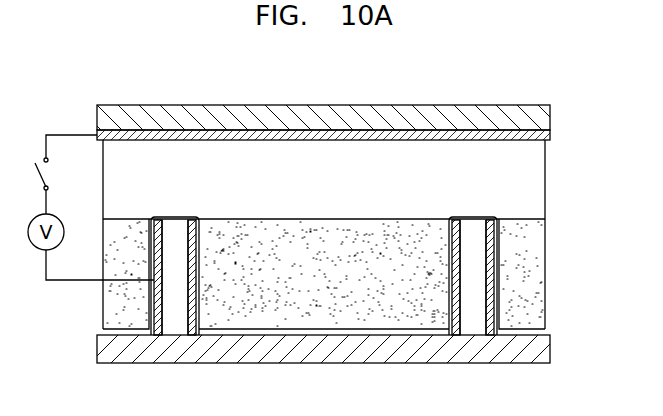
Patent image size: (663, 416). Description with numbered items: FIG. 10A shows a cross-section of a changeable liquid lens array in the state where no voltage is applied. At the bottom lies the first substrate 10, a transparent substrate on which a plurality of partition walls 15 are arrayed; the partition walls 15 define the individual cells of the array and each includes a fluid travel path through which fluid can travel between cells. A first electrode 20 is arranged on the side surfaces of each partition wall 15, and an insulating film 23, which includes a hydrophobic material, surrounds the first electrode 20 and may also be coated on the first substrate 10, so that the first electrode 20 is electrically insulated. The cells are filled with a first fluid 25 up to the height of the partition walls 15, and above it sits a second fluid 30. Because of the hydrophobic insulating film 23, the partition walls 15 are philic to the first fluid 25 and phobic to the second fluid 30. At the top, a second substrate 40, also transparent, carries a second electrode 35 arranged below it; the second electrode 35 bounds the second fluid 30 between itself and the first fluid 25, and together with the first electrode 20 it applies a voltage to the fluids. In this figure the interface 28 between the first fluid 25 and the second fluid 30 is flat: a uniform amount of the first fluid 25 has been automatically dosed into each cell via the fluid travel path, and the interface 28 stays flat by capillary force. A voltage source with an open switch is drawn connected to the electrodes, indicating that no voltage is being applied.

The first substrate 10 is at (550, 352).
The partition wall 15 is at (470, 330).
The first electrode 20 is at (490, 302).
The insulating film 23 is at (497, 270).
The first fluid 25 is at (322, 300).
The interface 28 is at (323, 219).
The second fluid 30 is at (537, 183).
The second electrode 35 is at (548, 137).
The second substrate 40 is at (550, 117).